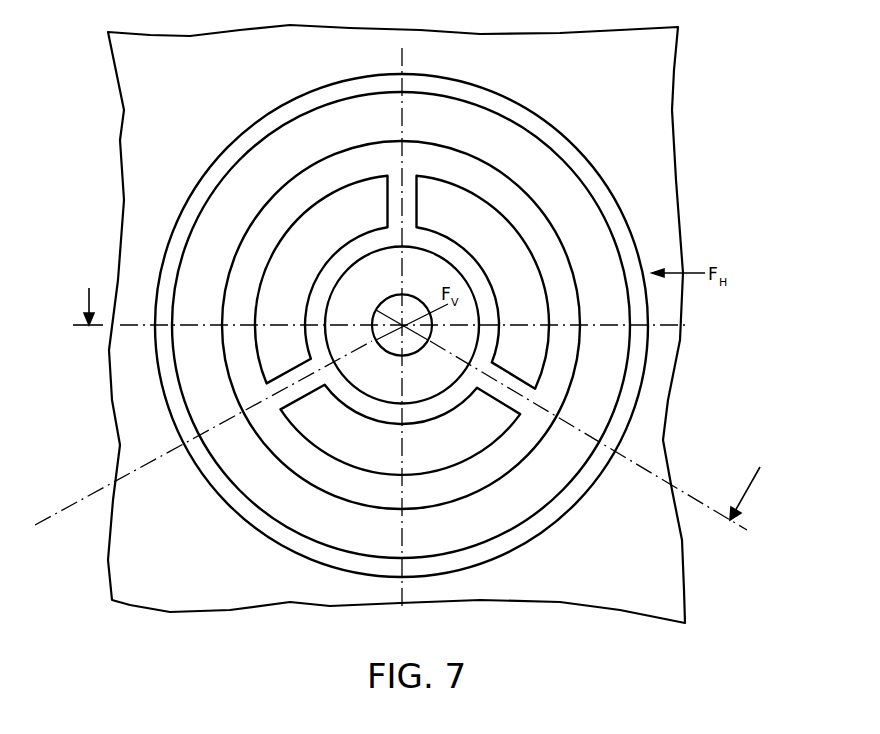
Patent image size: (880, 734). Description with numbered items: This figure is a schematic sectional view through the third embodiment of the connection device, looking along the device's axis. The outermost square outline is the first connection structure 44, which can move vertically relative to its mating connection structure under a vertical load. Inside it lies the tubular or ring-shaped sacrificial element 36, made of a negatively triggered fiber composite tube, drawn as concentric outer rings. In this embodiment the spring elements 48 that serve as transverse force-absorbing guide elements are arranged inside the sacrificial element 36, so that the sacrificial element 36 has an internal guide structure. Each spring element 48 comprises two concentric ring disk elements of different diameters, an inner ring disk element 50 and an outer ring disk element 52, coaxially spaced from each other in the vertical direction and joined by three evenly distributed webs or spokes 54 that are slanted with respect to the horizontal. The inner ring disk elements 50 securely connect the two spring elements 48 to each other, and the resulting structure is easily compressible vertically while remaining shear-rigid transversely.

The sacrificial element 36 is at (572, 150).
The first connection structure 44 is at (130, 425).
The spring element 48 is at (293, 198).
The inner ring disk element 50 is at (467, 267).
The outer ring disk element 52 is at (243, 277).
The webs or spokes 54 is at (407, 205).